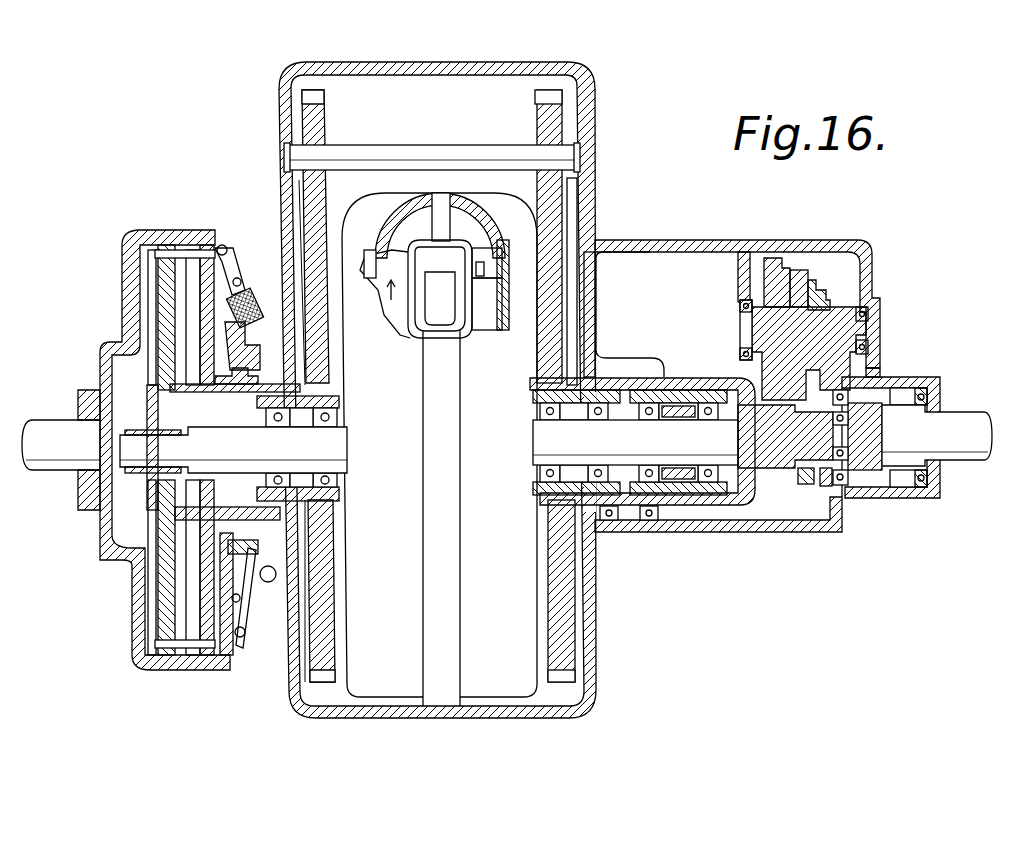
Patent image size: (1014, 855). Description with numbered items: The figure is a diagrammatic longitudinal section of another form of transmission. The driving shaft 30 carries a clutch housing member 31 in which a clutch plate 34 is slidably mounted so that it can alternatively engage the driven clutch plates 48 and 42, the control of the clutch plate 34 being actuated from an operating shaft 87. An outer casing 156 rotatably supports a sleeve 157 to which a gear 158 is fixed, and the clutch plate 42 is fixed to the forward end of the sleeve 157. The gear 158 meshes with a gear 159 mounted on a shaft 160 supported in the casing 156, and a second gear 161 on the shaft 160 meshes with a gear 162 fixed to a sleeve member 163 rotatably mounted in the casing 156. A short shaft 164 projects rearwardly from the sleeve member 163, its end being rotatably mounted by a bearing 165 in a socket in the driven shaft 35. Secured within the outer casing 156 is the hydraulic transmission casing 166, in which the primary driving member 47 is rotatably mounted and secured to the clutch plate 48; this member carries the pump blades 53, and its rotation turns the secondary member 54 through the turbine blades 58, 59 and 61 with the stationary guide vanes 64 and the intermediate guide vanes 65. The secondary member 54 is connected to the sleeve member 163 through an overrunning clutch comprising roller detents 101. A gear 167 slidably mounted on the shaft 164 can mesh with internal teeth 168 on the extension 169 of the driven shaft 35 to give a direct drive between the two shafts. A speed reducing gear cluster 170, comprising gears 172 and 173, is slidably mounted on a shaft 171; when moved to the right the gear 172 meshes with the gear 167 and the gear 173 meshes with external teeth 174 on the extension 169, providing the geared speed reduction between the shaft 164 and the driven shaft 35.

The driving shaft 30 is at (42, 430).
The clutch housing member 31 is at (146, 238).
The clutch plate 34 is at (178, 252).
The driven shaft 35 is at (970, 410).
The driven clutch plate 42 is at (206, 384).
The primary driving member 47 is at (233, 450).
The driven clutch plate 48 is at (158, 376).
The pump blades 53 is at (394, 320).
The secondary driven member 54 is at (635, 442).
The turbine blades 58 is at (484, 320).
The turbine blades 59 is at (475, 252).
The turbine blades 61 is at (398, 250).
The guide vanes 64 is at (440, 228).
The guide vanes 65 is at (470, 280).
The operating shaft 87 is at (267, 584).
The roller detents 101 is at (690, 486).
The outer casing 156 is at (466, 68).
The sleeve 157 is at (242, 392).
The gear 158 is at (330, 330).
The gear 159 is at (324, 120).
The shaft 160 is at (438, 150).
The gear 161 is at (537, 112).
The gear 162 is at (576, 298).
The sleeve member 163 is at (688, 386).
The short shaft 164 is at (790, 462).
The bearing 165 is at (878, 442).
The hydraulic transmission casing 166 is at (506, 704).
The gear 167 is at (806, 478).
The internal teeth 168 is at (826, 478).
The extension 169 is at (842, 500).
The speed reducing gear cluster 170 is at (810, 290).
The shaft 171 is at (778, 320).
The gear 172 is at (773, 258).
The gear 173 is at (804, 272).
The external teeth 174 is at (870, 372).